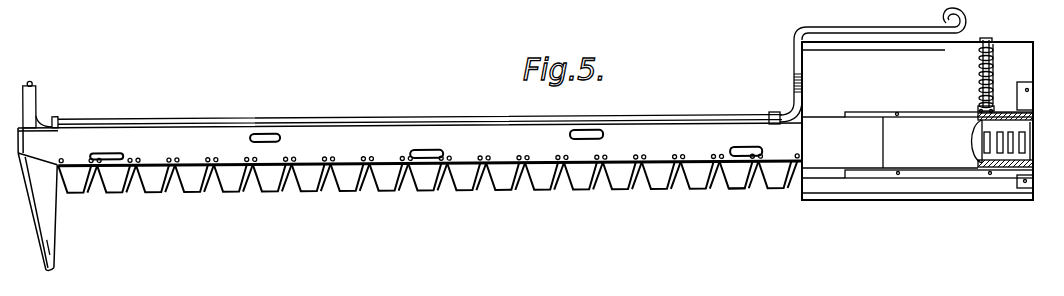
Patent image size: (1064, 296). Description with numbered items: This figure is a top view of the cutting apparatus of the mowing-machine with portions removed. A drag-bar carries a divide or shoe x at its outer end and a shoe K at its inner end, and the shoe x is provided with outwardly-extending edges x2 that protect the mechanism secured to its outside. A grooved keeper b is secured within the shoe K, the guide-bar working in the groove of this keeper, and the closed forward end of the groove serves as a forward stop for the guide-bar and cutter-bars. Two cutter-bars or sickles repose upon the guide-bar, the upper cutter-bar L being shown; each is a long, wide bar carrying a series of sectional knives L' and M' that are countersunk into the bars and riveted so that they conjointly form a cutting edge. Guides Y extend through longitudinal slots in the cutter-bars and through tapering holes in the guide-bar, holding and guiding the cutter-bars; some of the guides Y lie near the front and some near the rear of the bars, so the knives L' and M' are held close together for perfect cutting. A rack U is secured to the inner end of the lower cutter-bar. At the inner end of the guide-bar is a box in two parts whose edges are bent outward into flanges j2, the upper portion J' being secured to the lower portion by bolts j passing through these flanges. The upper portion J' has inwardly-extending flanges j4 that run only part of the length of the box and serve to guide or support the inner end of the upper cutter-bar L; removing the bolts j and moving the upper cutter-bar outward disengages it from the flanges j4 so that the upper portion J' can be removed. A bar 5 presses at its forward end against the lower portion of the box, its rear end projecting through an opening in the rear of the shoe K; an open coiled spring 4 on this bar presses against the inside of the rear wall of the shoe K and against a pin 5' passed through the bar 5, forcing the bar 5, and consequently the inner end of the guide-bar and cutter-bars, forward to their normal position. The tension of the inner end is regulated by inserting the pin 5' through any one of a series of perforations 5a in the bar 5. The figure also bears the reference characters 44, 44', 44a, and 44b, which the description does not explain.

The lifting rod 44 is at (430, 82).
The rod end / threaded portion 44' is at (412, 96).
The rod collar 44a is at (56, 120).
The rod arm with hook 44b is at (898, 20).
The keeper b is at (37, 98).
The upper cutter-bar L is at (490, 177).
The sectional knives L' is at (430, 187).
The sectional knives M' is at (746, 205).
The guides Y is at (257, 137).
The shoe x is at (58, 207).
The outwardly-extending edges x2 is at (43, 232).
The shoe K is at (917, 121).
The upper portion of the box J' is at (890, 142).
The bolts j is at (898, 178).
The flanges j2 is at (924, 110).
The inwardly-extending flanges j4 is at (1033, 125).
The rack U is at (1002, 157).
The coiled spring 4 is at (980, 62).
The bar 5 is at (992, 30).
The pin 5' is at (974, 98).
The perforations 5a is at (995, 106).